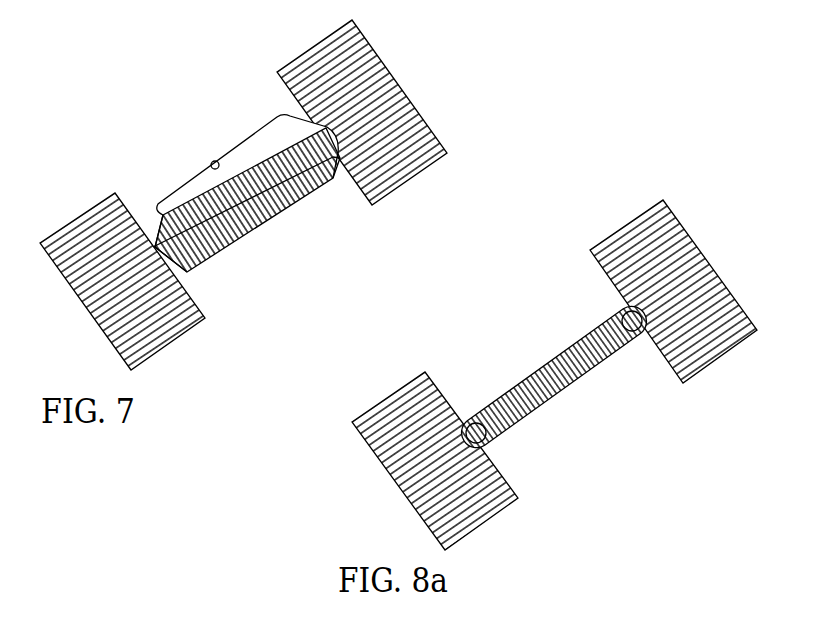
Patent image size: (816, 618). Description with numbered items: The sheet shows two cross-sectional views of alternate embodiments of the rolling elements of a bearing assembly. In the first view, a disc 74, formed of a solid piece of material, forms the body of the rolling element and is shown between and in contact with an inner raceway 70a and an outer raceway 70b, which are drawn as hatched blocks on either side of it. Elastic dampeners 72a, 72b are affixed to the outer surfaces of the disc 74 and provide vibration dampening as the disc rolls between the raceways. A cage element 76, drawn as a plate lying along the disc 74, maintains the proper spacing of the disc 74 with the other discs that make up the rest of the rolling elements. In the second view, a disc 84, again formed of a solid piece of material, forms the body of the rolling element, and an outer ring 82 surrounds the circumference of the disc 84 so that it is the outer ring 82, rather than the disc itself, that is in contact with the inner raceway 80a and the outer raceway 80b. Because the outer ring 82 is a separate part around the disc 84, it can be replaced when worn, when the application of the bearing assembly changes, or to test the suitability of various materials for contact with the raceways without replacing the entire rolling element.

In FIG. 7, the inner raceway 70a is at (414, 104).
In FIG. 7, the outer raceway 70b is at (108, 332).
In FIG. 7, the elastic dampener 72a is at (219, 252).
In FIG. 7, the elastic dampener 72b is at (157, 224).
In FIG. 7, the disc 74 is at (329, 155).
In FIG. 7, the cage element 76 is at (233, 144).
In FIG. 8a, the inner raceway 80a is at (705, 262).
In FIG. 8a, the outer raceway 80b is at (380, 462).
In FIG. 8a, the outer ring 82 is at (637, 338).
In FIG. 8a, the disc 84 is at (541, 400).